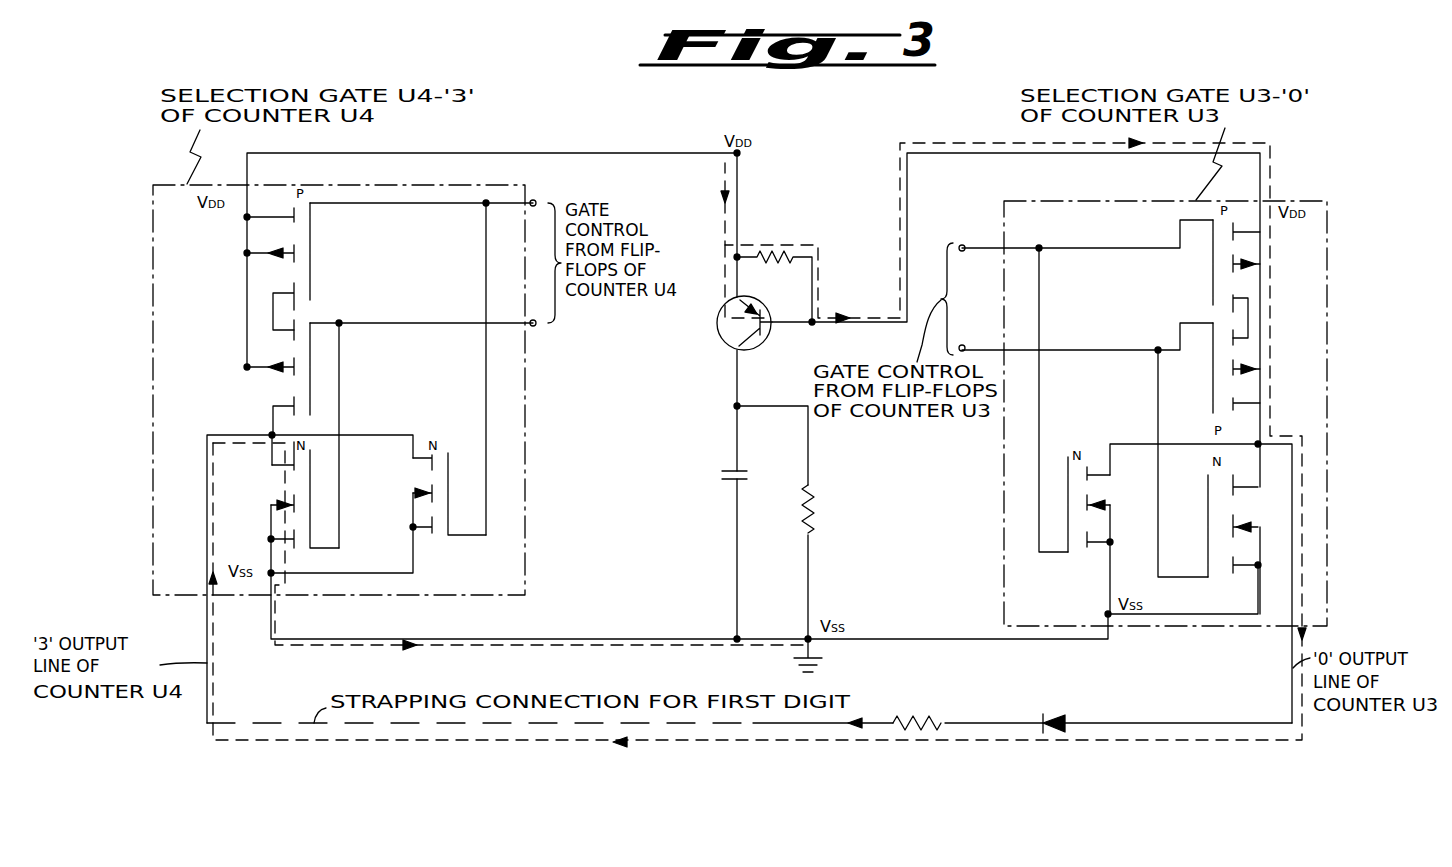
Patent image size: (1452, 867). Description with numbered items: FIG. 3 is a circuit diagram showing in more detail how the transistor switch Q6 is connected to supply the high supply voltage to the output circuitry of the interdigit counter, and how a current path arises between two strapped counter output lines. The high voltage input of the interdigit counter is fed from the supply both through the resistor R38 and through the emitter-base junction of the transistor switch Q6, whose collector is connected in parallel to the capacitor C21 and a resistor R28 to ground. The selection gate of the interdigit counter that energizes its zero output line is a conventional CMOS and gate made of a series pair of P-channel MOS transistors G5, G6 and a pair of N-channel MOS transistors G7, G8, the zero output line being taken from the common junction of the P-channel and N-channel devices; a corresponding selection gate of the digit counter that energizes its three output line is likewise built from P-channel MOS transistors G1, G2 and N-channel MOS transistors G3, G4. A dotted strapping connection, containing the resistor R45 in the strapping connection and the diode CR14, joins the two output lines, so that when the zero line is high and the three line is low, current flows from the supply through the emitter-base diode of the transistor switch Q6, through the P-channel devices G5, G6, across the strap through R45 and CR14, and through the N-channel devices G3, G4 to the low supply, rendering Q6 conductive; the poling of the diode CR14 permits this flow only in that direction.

The P-channel MOS transistor of selection gate U4-'3' G1 is at (346, 272).
The P-channel MOS transistor of selection gate U4-'3' G2 is at (318, 399).
The N-channel MOS transistor of selection gate U4-'3' G3 is at (318, 519).
The N-channel MOS transistor of selection gate U4-'3' G4 is at (457, 492).
The P-channel MOS transistor of selection gate U3-'0' G5 is at (1208, 246).
The P-channel MOS transistor of selection gate U3-'0' G6 is at (1208, 358).
The N-channel MOS transistor of selection gate U3-'0' G7 is at (1203, 522).
The N-channel MOS transistor of selection gate U3-'0' G8 is at (1058, 489).
The transistor switch Q6 is at (719, 325).
The resistor R38 is at (774, 272).
The resistor R28 is at (832, 509).
The capacitor C21 is at (713, 474).
The resistor in strapping connection R45 is at (917, 712).
The diode CR14 is at (1060, 710).